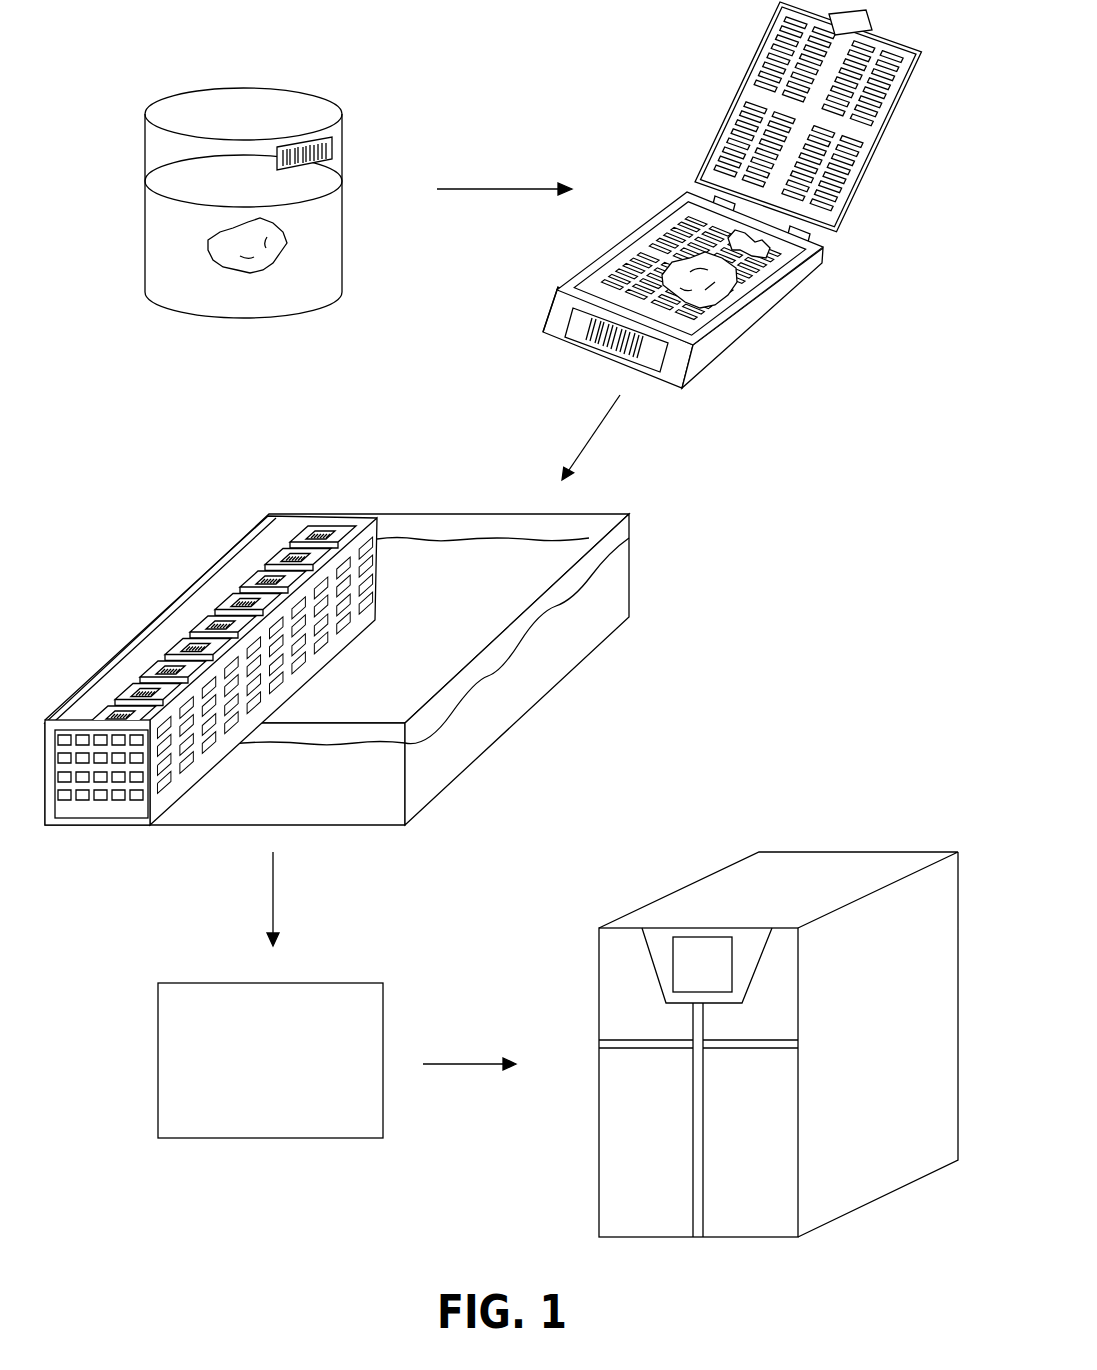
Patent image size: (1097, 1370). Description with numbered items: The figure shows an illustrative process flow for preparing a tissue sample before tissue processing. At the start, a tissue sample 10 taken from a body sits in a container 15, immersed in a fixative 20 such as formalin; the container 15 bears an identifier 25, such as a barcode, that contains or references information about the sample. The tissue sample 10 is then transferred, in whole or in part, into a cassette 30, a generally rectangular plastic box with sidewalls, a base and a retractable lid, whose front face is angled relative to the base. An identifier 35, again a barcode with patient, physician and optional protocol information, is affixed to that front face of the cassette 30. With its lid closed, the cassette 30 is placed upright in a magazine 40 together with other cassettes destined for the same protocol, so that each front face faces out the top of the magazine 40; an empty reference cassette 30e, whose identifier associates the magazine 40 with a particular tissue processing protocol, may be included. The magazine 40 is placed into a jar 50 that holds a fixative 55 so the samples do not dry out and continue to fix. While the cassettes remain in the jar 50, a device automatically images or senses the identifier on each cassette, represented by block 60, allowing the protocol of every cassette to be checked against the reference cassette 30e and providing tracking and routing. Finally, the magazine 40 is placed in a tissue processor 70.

The tissue sample 10 is at (272, 248).
The container 15 is at (343, 125).
The fixative 20 is at (322, 213).
The identifier 25 is at (322, 153).
The cassette 30 is at (88, 707).
The reference cassette 30e is at (285, 527).
The identifier 35 is at (193, 603).
The magazine 40 is at (260, 540).
The jar 50 is at (495, 512).
The fixative 55 is at (623, 567).
The identifier sensing block 60 is at (347, 983).
The tissue processor 70 is at (657, 902).